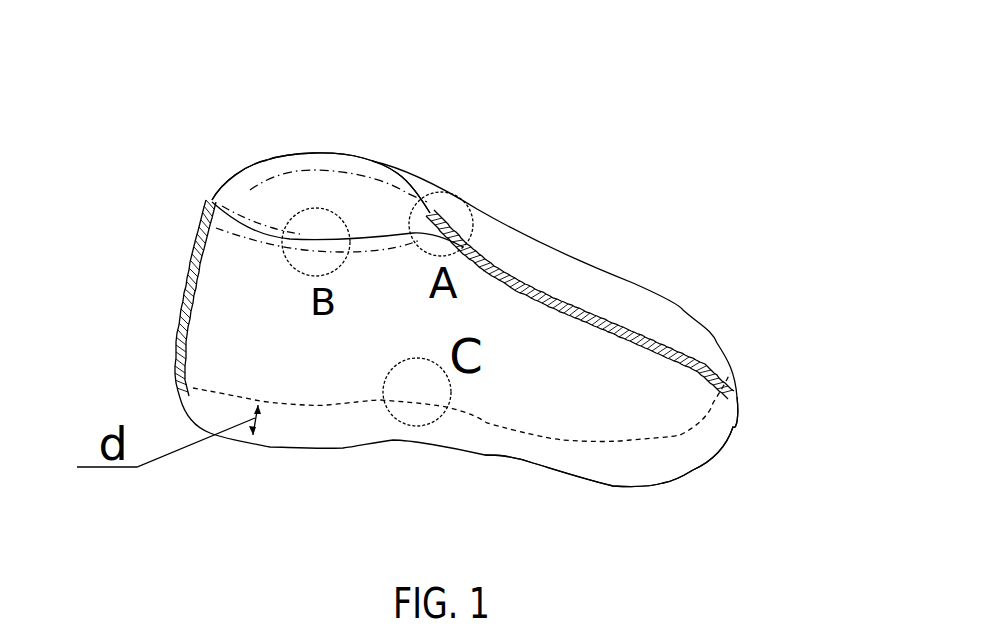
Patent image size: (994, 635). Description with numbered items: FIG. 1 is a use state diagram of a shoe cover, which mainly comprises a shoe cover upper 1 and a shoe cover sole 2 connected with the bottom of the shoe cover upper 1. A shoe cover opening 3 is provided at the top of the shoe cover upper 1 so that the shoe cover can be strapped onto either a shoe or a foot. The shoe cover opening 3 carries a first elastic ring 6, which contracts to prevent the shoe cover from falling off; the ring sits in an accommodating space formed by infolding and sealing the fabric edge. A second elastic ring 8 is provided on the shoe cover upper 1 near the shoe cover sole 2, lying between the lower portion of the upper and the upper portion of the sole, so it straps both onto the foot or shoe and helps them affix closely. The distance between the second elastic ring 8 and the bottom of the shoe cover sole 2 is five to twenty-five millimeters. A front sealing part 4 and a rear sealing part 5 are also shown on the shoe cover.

The shoe cover upper 1 is at (632, 207).
The shoe cover sole 2 is at (642, 477).
The shoe cover opening 3 is at (384, 119).
The front sealing part 4 is at (577, 244).
The rear sealing part 5 is at (148, 299).
The first elastic ring 6 is at (300, 137).
The second elastic ring 8 is at (461, 449).